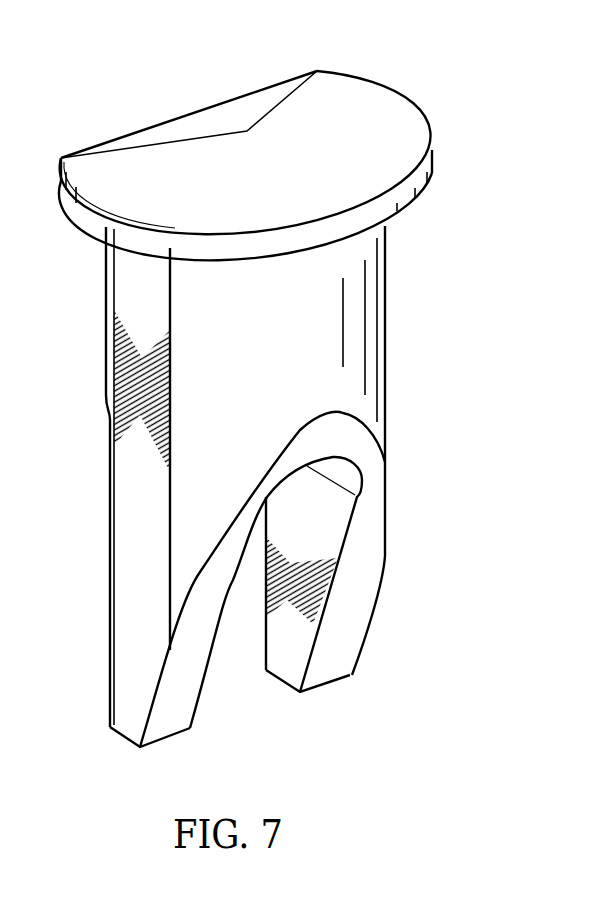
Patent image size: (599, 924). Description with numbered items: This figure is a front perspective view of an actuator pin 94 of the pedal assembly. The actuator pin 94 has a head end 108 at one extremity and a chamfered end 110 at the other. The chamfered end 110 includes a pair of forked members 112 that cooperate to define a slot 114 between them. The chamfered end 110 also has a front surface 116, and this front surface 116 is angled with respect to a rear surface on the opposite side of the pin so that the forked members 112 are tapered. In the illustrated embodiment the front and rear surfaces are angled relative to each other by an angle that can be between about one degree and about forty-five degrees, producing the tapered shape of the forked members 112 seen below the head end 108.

The actuator pin 94 is at (100, 66).
The head end 108 is at (372, 62).
The chamfered end 110 is at (84, 713).
The forked members 112 is at (175, 750).
The slot 114 is at (252, 714).
The front surface 116 is at (181, 663).